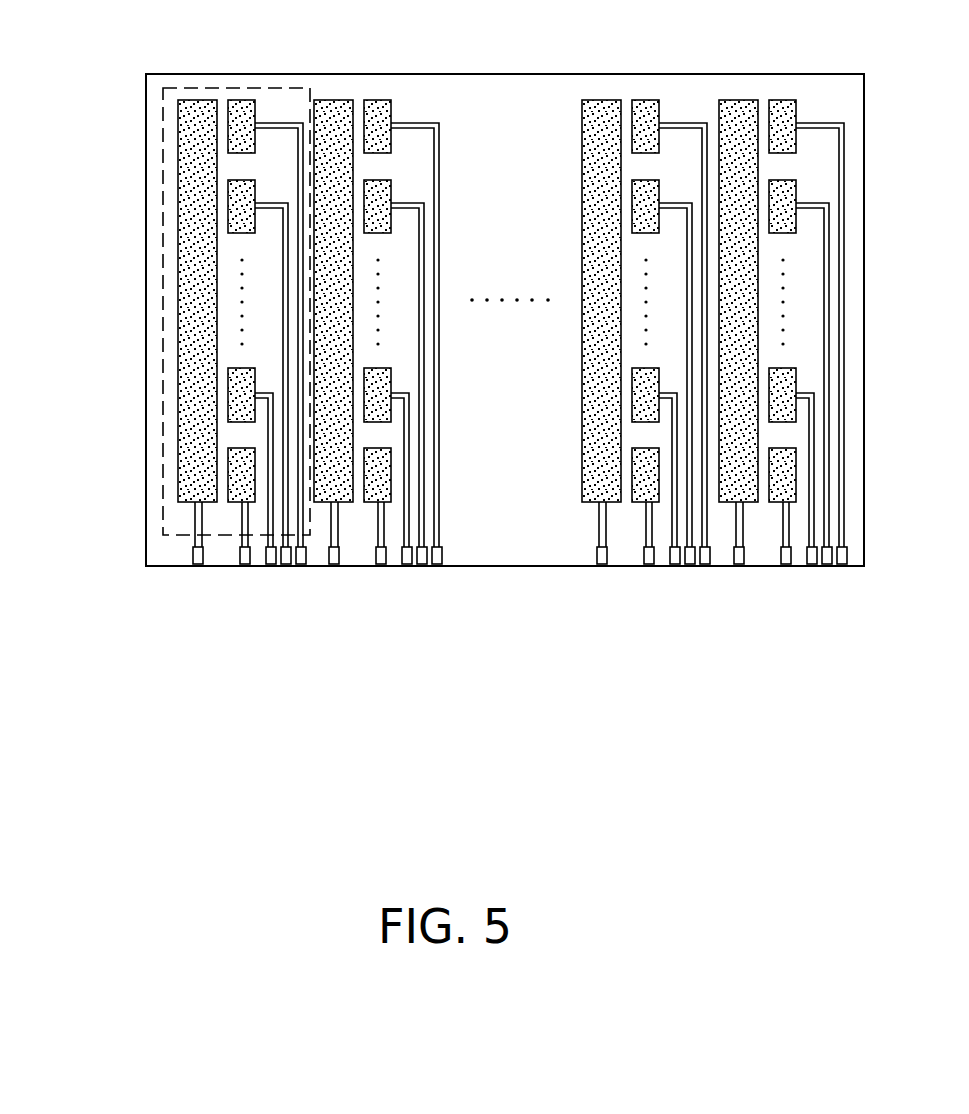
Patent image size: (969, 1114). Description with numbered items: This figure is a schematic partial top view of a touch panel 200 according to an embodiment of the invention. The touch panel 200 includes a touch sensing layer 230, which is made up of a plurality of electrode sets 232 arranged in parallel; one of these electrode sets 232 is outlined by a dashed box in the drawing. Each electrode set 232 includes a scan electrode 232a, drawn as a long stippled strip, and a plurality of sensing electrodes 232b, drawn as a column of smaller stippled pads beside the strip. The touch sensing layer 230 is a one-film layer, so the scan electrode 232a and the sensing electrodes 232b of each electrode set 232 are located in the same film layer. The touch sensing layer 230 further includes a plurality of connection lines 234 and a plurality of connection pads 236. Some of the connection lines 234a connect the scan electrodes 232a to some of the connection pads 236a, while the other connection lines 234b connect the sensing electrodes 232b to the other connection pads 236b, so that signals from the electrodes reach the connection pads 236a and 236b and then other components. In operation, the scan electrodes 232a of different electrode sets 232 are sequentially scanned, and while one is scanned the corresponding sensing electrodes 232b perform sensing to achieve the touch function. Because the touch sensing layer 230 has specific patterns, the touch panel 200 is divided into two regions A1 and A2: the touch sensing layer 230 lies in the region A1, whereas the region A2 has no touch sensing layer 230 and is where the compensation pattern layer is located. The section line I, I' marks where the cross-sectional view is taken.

The touch panel 200 is at (843, 757).
The touch sensing layer 230 is at (165, 344).
The electrode set 232 is at (163, 138).
The scan electrode 232a is at (198, 100).
The sensing electrode 232b is at (242, 100).
The connection line 234 is at (134, 511).
The connection line 234a is at (195, 515).
The connection line 234b is at (242, 528).
The connection pad 236 is at (220, 616).
The connection pad 236a is at (200, 568).
The connection pad 236b is at (245, 568).
The region A1 is at (630, 109).
The line I-I' I is at (644, 65).
The line I- I' is at (671, 65).
The region A2 is at (698, 111).